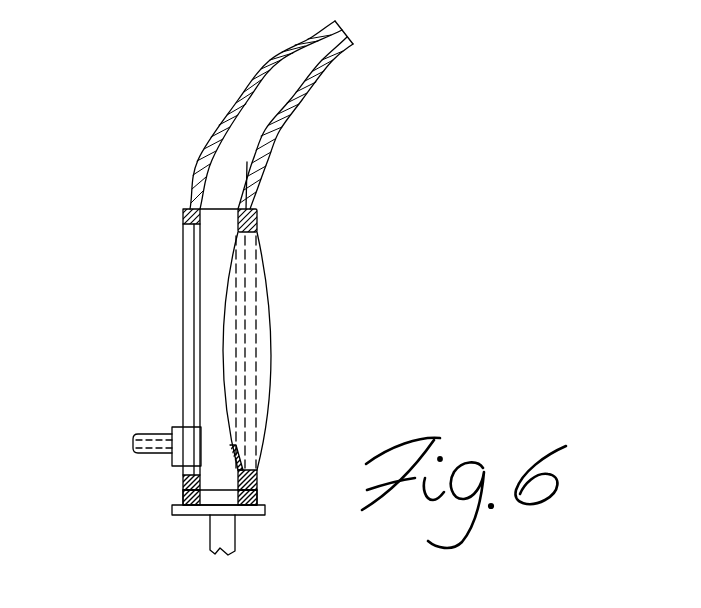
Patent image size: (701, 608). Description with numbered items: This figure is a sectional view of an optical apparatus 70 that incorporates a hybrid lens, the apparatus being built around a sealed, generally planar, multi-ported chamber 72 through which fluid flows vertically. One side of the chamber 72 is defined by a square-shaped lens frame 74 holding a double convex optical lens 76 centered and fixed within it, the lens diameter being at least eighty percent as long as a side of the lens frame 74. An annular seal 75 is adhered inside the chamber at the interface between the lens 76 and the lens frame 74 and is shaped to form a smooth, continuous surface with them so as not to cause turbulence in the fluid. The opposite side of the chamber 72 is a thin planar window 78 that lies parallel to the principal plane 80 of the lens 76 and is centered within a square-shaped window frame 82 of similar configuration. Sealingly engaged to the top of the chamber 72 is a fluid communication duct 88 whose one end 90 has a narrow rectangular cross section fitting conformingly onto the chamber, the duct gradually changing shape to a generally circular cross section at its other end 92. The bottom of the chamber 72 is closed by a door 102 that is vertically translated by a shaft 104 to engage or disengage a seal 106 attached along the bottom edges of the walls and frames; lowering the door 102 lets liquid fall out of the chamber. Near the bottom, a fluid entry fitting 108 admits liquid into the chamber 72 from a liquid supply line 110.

The optical apparatus 70 is at (296, 305).
The chamber 72 is at (206, 276).
The lens frame 74 is at (258, 471).
The annular seal 75 is at (236, 237).
The double convex optical lens 76 is at (268, 363).
The planar window 78 is at (196, 312).
The principal plane 80 is at (258, 279).
The window frame 82 is at (183, 480).
The fluid communication duct 88 is at (288, 117).
The one end of duct 90 is at (197, 193).
The other end of duct 92 is at (312, 38).
The door 102 is at (173, 508).
The shaft 104 is at (210, 551).
The seal 106 is at (257, 492).
The fluid entry fitting 108 is at (174, 428).
The liquid supply line 110 is at (133, 438).